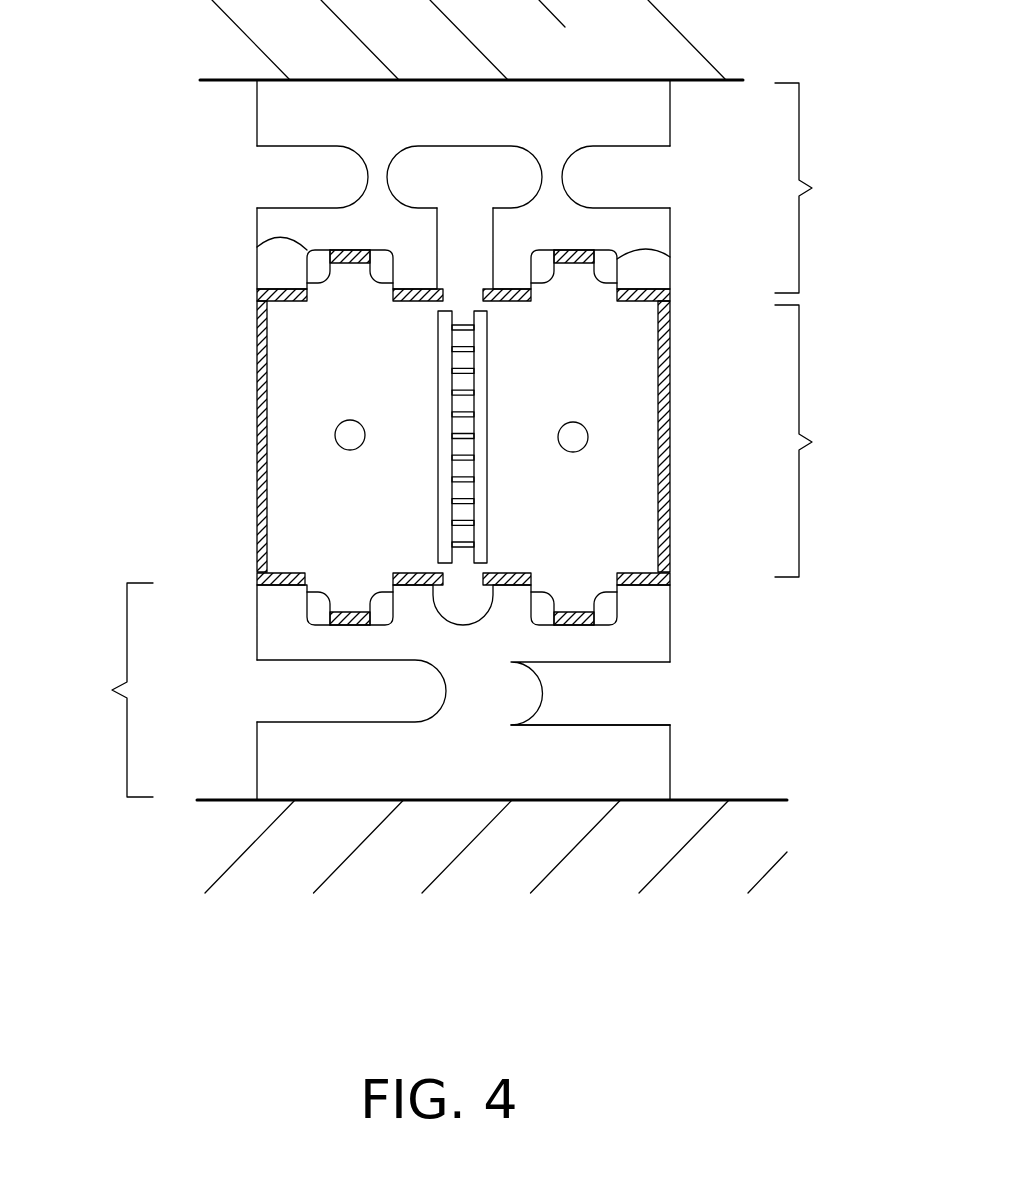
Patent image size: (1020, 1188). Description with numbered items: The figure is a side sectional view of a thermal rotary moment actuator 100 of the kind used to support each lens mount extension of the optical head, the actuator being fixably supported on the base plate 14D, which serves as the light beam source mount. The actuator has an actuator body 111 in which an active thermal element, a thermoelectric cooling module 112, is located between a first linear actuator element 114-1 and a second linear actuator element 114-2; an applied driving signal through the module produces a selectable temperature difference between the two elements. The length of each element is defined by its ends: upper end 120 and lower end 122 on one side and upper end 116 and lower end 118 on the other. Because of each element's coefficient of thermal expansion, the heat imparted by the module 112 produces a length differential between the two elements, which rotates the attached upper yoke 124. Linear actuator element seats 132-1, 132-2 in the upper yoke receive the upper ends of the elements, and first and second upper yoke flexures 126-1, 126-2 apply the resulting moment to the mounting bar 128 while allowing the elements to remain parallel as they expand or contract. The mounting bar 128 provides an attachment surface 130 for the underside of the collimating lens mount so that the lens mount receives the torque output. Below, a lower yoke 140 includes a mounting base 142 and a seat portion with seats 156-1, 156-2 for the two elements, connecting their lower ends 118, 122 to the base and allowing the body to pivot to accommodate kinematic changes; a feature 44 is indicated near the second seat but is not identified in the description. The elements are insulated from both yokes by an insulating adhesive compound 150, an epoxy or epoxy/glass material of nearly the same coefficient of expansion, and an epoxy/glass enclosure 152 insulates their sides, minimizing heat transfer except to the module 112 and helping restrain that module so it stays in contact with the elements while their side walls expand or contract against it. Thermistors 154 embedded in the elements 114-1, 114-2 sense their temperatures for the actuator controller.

The thermal rotary moment actuator 100 is at (118, 298).
The attachment surface 130 is at (585, 80).
The base plate 14D is at (706, 800).
The mounting bar 128 is at (670, 110).
The first upper yoke flexure 126-1 is at (340, 176).
The second upper yoke flexure 126-2 is at (514, 175).
The linear actuator element seat 132-1 is at (612, 262).
The linear actuator element seat 132-2 is at (257, 247).
The insulating adhesive compound 150 is at (386, 267).
The upper end of linear actuator element 120 is at (355, 264).
The upper end of linear actuator element 116 is at (579, 264).
The lower end of linear actuator element 122 is at (349, 611).
The lower end of linear actuator element 118 is at (571, 611).
The epoxy/glass enclosure 152 is at (257, 368).
The first linear actuator element 114-1 is at (292, 430).
The second linear actuator element 114-2 is at (614, 531).
The thermoelectric cooling element module 112 is at (488, 372).
The thermistor 154 is at (352, 450).
The mounting base 142 is at (257, 742).
The seat 156-1 is at (305, 617).
The seat 156-2 is at (533, 617).
The slot surface 44 is at (605, 707).
The upper yoke 124 is at (812, 188).
The actuator body 111 is at (812, 442).
The lower yoke 140 is at (112, 690).